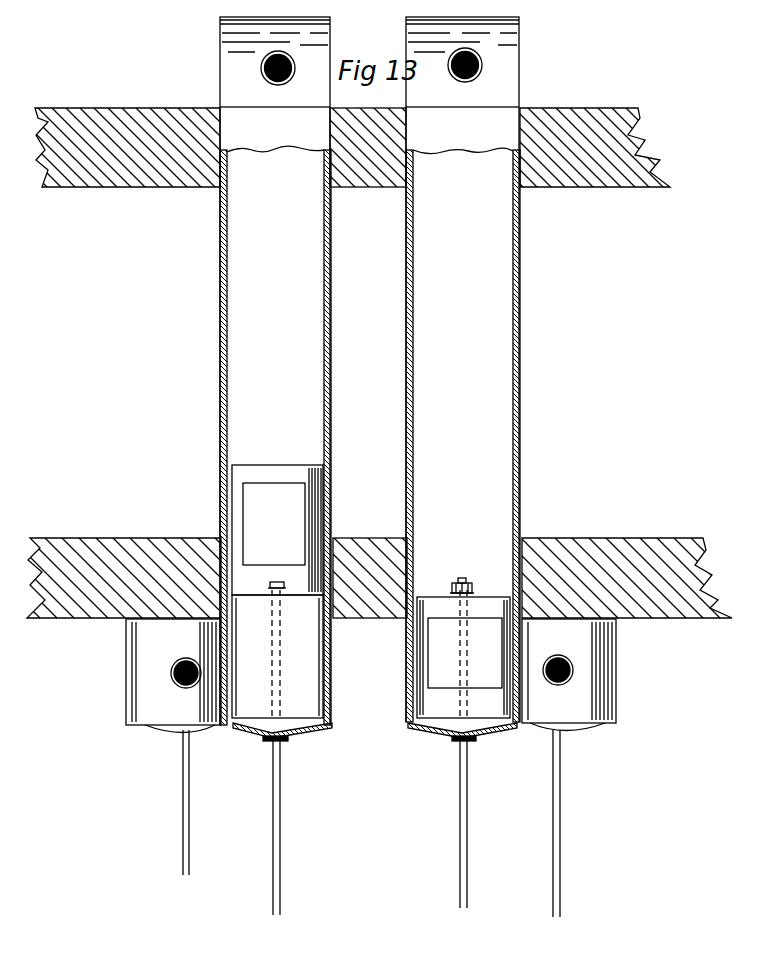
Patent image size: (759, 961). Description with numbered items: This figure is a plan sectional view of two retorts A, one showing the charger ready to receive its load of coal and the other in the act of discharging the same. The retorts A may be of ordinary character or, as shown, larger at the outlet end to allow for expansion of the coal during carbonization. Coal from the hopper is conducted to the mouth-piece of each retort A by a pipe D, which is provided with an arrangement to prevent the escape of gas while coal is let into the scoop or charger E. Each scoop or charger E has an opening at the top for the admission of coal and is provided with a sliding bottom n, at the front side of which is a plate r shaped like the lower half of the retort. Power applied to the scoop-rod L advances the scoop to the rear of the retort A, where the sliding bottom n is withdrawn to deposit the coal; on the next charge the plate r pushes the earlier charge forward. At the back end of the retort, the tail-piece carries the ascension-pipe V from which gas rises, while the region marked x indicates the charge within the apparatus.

The retort A is at (371, 375).
The liquid in upper chamber x is at (369, 54).
The ascension-pipe V is at (292, 60).
The pipe D is at (186, 658).
The sliding bottom n is at (374, 601).
The scoop or charger E is at (358, 599).
The plate r is at (490, 597).
The scoop-rod L is at (190, 795).